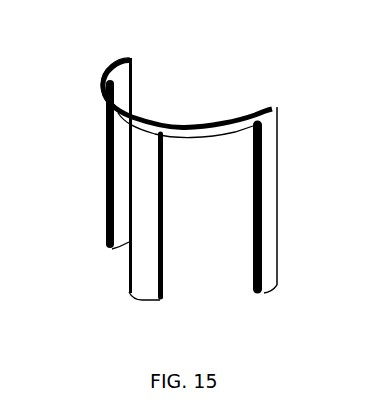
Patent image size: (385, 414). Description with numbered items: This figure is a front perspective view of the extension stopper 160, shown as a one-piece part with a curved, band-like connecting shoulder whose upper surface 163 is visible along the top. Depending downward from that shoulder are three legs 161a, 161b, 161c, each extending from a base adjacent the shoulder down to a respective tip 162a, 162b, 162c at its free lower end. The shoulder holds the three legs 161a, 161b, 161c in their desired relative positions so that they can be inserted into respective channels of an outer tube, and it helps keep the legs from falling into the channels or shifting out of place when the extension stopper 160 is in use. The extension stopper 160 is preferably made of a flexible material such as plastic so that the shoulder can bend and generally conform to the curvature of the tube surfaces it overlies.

The extension stopper 160 is at (83, 59).
The first leg 161a is at (263, 228).
The second leg 161b is at (143, 183).
The third leg 161c is at (117, 182).
The tip of first leg 162a is at (265, 288).
The tip of second leg 162b is at (140, 302).
The tip of third leg 162c is at (107, 248).
The upper surface 163 is at (258, 110).